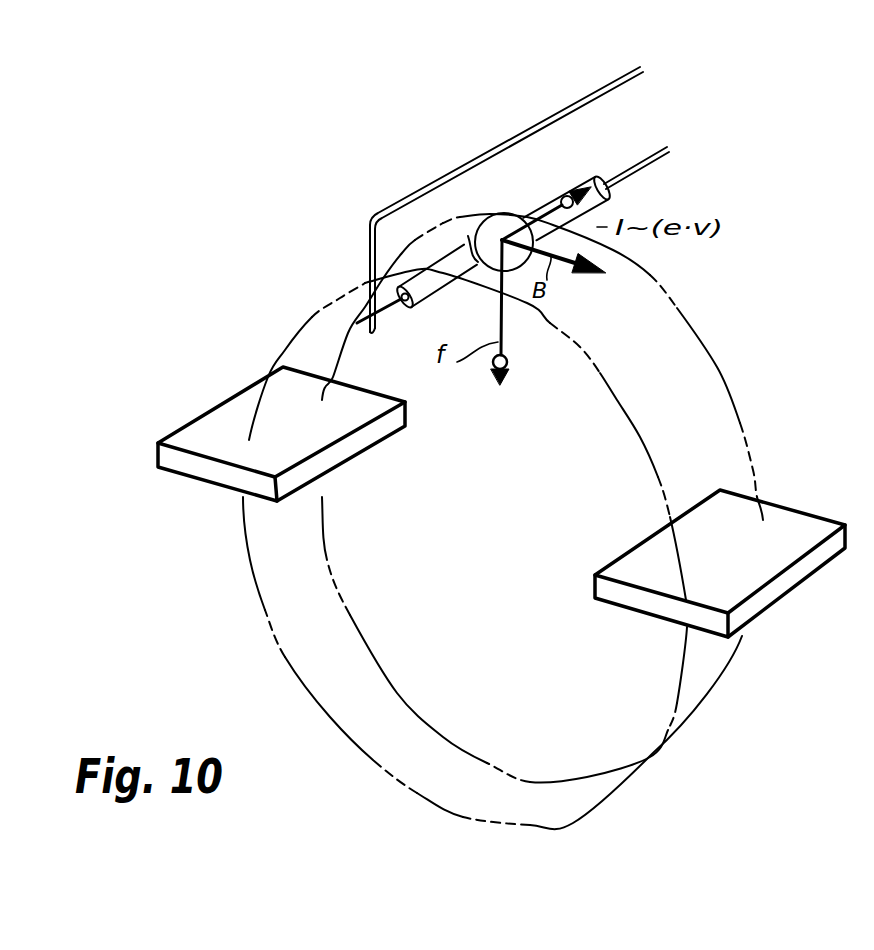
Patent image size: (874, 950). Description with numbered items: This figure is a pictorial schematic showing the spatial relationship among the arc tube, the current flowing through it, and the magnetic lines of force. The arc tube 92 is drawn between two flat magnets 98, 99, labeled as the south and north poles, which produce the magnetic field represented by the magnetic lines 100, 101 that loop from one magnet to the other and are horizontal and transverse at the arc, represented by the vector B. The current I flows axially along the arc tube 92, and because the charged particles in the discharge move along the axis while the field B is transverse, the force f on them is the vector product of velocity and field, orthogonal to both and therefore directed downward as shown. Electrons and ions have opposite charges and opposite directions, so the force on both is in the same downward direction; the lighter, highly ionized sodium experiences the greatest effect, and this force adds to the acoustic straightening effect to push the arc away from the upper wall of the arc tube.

The magnetic field sensor coil 92 is at (486, 218).
The flat magnet 98 is at (820, 513).
The flat magnet 99 is at (198, 480).
The magnetic line 100 is at (617, 399).
The magnetic line 101 is at (719, 368).